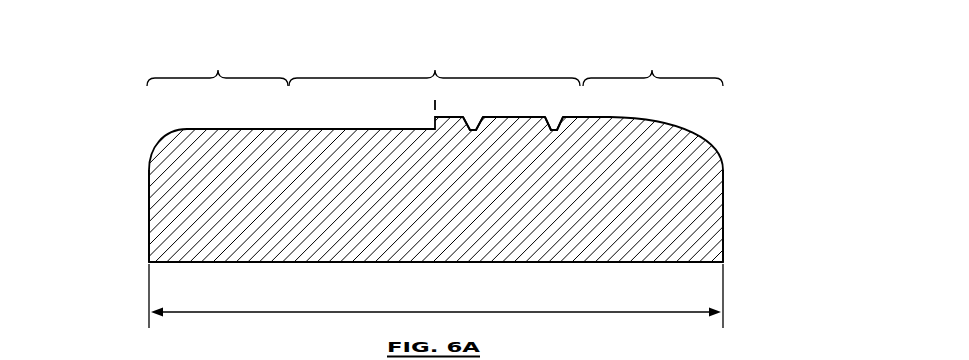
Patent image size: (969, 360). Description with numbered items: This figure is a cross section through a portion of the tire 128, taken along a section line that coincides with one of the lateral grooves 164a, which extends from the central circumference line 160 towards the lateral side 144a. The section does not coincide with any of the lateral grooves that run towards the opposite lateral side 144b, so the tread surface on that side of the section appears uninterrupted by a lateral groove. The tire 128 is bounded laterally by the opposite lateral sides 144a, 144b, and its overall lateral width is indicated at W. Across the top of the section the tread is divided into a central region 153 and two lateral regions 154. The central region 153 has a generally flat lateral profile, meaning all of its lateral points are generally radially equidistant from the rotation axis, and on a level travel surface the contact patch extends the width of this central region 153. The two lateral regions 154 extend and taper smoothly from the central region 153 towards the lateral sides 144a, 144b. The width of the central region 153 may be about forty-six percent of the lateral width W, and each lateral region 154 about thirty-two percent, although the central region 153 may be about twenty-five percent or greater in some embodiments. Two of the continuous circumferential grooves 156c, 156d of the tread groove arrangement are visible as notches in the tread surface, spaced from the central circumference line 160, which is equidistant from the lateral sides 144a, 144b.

The tire 128 is at (122, 76).
The lateral regions 154 is at (435, 64).
The central region 153 is at (434, 64).
The lateral groove 164a is at (298, 114).
The circumferential groove 156c is at (478, 108).
The circumferential groove 156d is at (555, 108).
The lateral side 144a is at (138, 211).
The lateral side 144b is at (736, 216).
The central circumference line 160 is at (435, 262).
The lateral width of the tire W is at (436, 296).